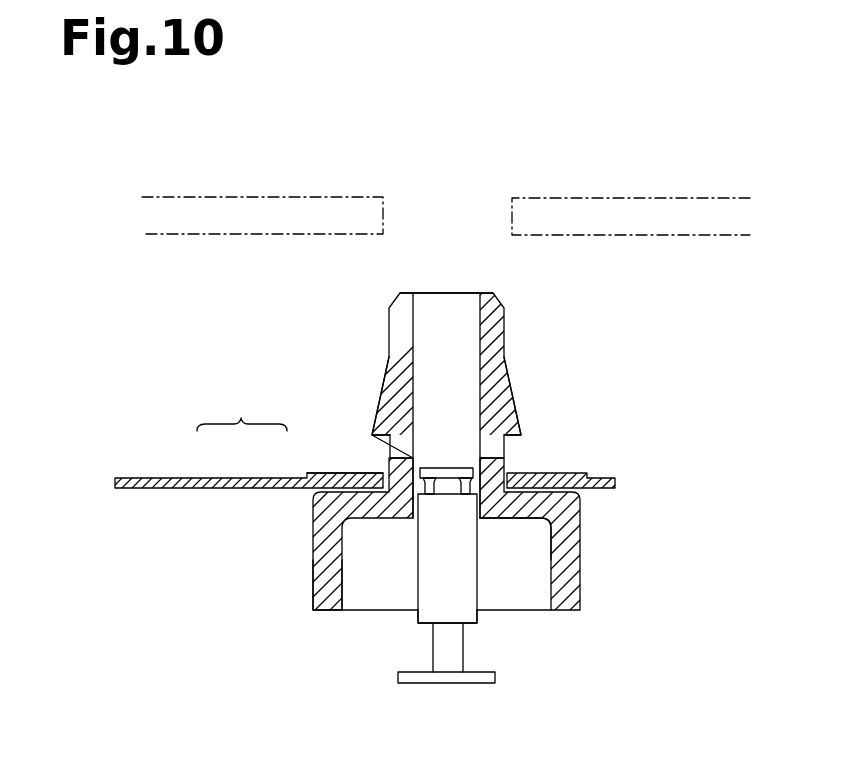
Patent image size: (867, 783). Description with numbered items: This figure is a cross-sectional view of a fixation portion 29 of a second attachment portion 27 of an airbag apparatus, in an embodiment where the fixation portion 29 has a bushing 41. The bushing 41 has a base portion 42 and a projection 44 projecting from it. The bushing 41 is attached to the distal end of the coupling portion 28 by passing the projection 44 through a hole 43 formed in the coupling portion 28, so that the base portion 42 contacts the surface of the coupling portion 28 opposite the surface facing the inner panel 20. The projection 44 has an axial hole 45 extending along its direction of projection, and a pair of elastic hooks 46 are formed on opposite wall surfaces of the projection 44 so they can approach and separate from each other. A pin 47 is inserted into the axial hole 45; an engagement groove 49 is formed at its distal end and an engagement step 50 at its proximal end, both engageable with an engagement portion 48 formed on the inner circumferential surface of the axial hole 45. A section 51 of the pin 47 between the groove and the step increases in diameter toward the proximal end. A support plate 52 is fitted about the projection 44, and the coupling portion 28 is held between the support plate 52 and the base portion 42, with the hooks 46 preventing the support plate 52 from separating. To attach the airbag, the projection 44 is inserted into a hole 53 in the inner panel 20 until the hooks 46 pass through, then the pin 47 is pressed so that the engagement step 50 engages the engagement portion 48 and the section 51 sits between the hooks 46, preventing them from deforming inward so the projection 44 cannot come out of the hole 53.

The inner panel 20 is at (614, 198).
The hole 53 is at (512, 210).
The second attachment portion 27 is at (242, 410).
The coupling portion 28 is at (220, 478).
The fixation portion 29 is at (320, 442).
The bushing 41 is at (313, 525).
The base portion 42 is at (318, 600).
The hole 43 is at (509, 520).
The projection 44 is at (497, 317).
The axial hole 45 is at (420, 302).
The hooks 46 is at (379, 405).
The pin 47 is at (463, 650).
The engagement portion 48 is at (464, 468).
The engagement groove 49 is at (447, 494).
The engagement step 50 is at (425, 623).
The section 51 is at (432, 580).
The support plate 52 is at (578, 473).